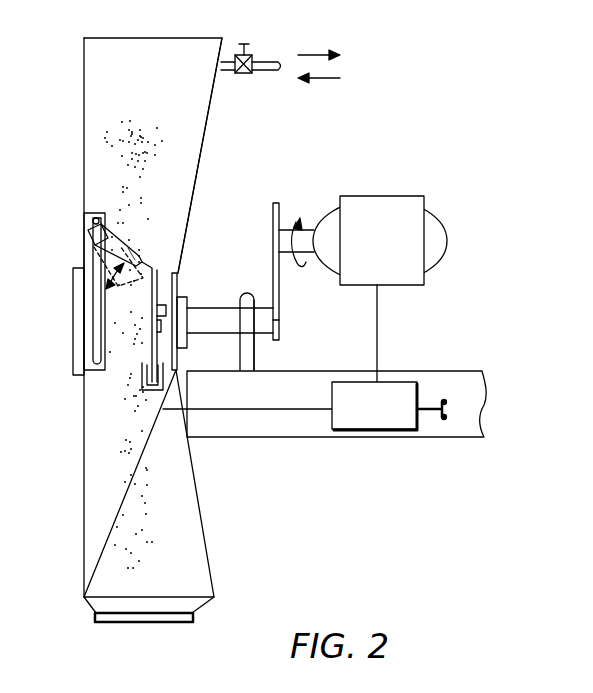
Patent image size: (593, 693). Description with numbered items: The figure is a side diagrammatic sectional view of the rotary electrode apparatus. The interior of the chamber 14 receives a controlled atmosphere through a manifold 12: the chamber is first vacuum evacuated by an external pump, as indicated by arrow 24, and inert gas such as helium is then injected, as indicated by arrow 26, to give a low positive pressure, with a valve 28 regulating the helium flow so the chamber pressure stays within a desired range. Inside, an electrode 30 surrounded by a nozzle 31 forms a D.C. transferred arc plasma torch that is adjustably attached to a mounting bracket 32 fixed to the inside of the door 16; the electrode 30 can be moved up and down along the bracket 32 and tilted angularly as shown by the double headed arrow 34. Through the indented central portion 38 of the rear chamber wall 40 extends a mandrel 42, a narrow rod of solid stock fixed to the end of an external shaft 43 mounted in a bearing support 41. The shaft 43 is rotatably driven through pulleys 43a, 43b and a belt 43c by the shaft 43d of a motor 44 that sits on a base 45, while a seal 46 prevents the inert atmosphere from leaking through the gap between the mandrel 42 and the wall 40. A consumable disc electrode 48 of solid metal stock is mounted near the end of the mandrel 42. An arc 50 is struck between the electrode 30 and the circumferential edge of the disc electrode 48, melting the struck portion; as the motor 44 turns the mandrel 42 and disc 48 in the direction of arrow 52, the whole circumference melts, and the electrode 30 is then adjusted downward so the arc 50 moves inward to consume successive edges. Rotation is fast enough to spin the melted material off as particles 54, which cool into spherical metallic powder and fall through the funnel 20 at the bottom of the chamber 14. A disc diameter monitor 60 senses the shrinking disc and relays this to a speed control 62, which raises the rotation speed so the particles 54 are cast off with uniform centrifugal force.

The manifold 12 is at (227, 71).
The chamber 14 is at (80, 46).
The door 16 is at (83, 93).
The funnel 20 is at (198, 602).
The arrow 24 is at (316, 55).
The arrow 26 is at (318, 79).
The valve 28 is at (251, 57).
The electrode 30 is at (118, 238).
The nozzle 31 is at (141, 238).
The mounting bracket 32 is at (88, 213).
The double headed arrow 34 is at (127, 283).
The indented central portion 38 is at (177, 281).
The rear chamber wall 40 is at (200, 150).
The bearing support 41 is at (242, 300).
The mandrel 42 is at (162, 314).
The external shaft 43 is at (262, 334).
The pulley 43a is at (283, 322).
The pulley 43b is at (273, 232).
The belt 43c is at (275, 285).
The motor shaft 43d is at (307, 230).
The motor 44 is at (400, 197).
The base 45 is at (470, 388).
The seal 46 is at (180, 342).
The disc electrode 48 is at (151, 344).
The arc 50 is at (152, 266).
The arrow 52 is at (300, 212).
The particles 54 is at (126, 152).
The disc diameter monitor 60 is at (142, 384).
The speed control 62 is at (362, 430).